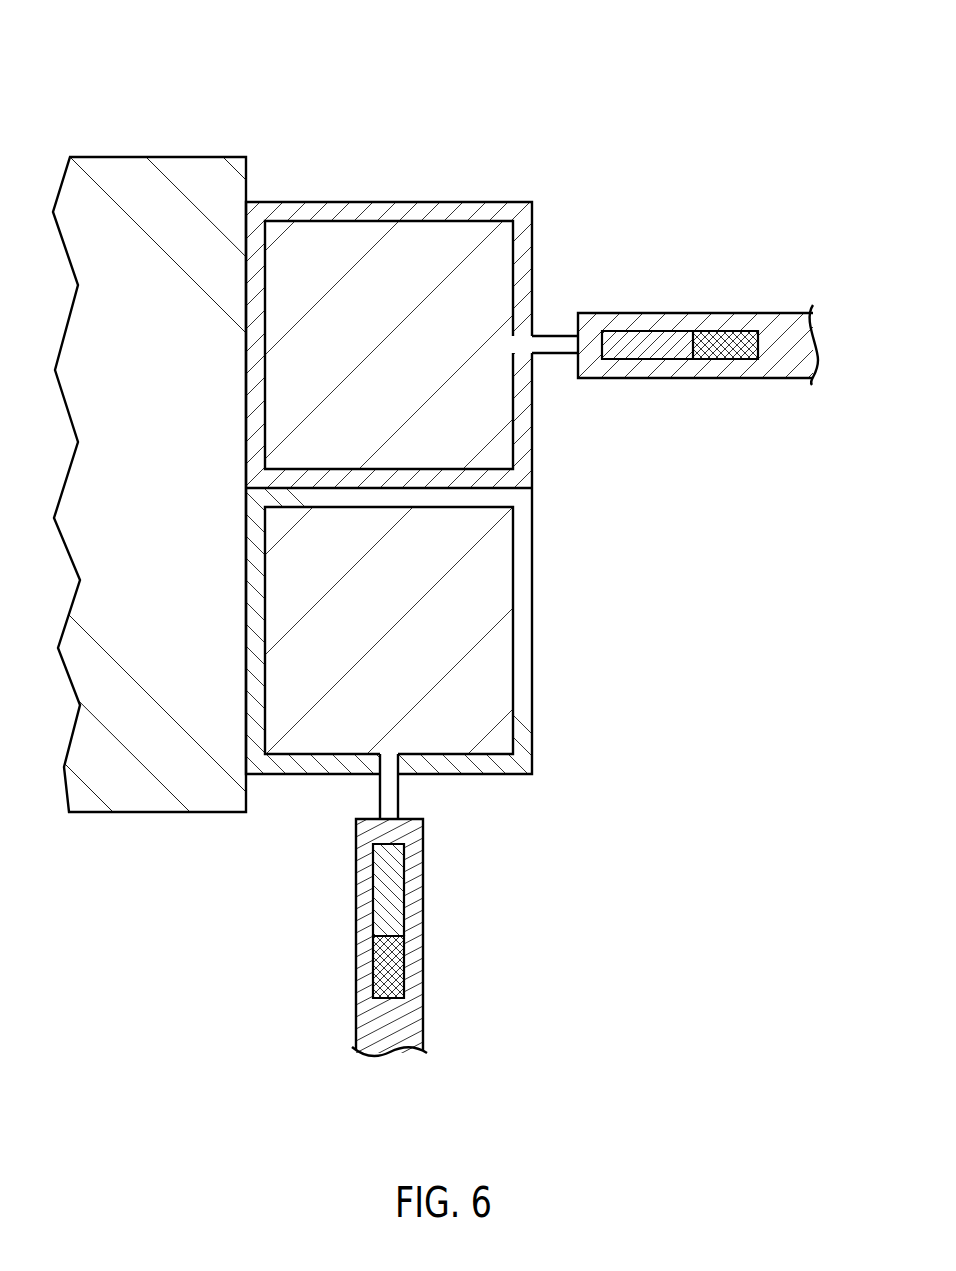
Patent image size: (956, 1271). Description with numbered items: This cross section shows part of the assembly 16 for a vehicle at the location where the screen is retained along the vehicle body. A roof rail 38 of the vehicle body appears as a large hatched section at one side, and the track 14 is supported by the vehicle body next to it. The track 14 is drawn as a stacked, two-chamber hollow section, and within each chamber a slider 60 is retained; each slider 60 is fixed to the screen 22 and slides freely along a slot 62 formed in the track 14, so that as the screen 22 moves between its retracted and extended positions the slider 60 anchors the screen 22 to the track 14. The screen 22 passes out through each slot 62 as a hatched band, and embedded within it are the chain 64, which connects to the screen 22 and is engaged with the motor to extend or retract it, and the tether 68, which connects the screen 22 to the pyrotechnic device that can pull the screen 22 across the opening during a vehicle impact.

The track 14 is at (483, 202).
The assembly 16 is at (403, 90).
The screen 22 is at (780, 312).
The roof rail 38 is at (192, 157).
The slider 60 is at (442, 395).
The slot 62 is at (521, 336).
The chain 64 is at (652, 342).
The tether 68 is at (722, 342).